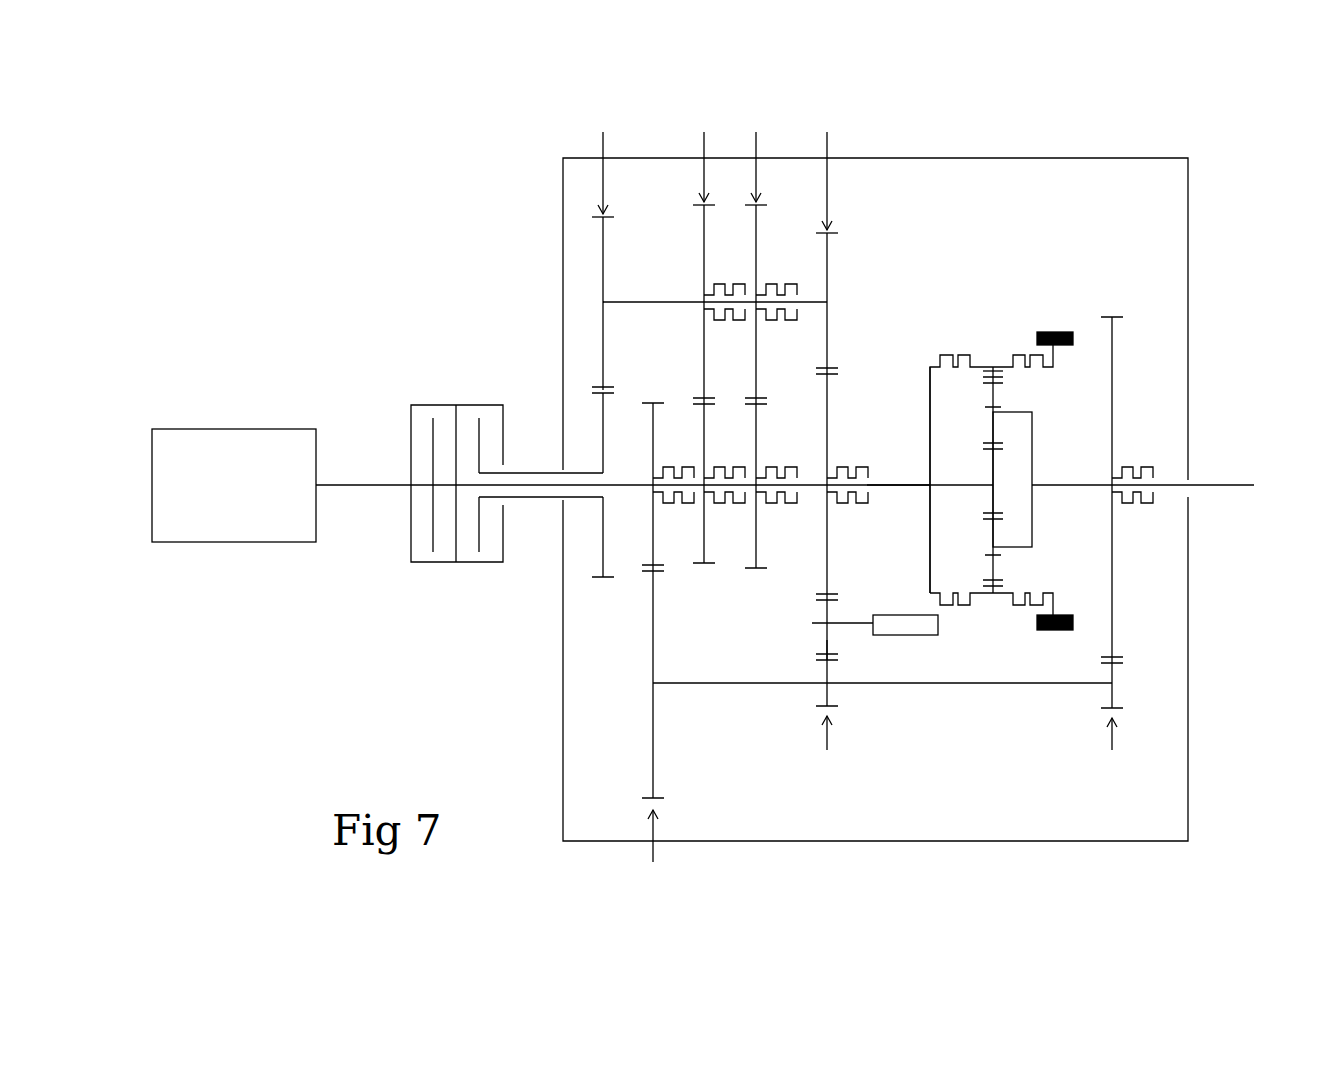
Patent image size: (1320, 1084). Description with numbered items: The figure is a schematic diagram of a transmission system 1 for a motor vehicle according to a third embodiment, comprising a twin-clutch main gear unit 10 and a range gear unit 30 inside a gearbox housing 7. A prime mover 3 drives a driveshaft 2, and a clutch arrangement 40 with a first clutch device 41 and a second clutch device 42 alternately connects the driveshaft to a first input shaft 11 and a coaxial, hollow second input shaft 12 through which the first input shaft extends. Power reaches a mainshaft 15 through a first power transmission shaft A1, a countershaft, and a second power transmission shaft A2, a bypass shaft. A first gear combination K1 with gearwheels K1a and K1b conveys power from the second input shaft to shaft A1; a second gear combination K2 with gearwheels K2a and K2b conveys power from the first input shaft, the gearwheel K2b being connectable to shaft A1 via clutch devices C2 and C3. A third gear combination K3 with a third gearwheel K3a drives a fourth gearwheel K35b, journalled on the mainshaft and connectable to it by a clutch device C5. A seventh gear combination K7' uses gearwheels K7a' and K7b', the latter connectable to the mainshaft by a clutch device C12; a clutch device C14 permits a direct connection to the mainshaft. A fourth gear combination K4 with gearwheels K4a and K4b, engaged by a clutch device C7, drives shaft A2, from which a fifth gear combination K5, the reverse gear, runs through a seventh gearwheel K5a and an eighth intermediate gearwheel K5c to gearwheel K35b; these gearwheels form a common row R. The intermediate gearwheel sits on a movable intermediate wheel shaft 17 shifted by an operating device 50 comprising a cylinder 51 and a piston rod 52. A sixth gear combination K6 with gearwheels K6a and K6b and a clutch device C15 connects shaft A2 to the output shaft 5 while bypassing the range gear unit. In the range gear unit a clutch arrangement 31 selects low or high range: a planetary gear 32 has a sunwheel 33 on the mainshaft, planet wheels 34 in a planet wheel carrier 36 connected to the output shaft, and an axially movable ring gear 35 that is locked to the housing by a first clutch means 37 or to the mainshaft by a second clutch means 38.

The transmission system 1 is at (432, 214).
The driveshaft 2 is at (355, 478).
The prime mover 3 is at (228, 432).
The output shaft 5 is at (1212, 480).
The gearbox housing 7 is at (1012, 157).
The twin-clutch main gear unit 10 is at (893, 282).
The first input shaft 11 is at (623, 480).
The second input shaft 12 is at (536, 470).
The mainshaft 15 is at (900, 490).
The intermediate wheel shaft 17 is at (822, 625).
The range gear unit 30 is at (1010, 428).
The clutch arrangement 31 is at (990, 356).
The planetary gear 32 is at (1053, 534).
The sunwheel 33 is at (990, 465).
The planet wheels 34 is at (995, 397).
The ring gear 35 is at (990, 372).
The planet wheel carrier 36 is at (1033, 453).
The first clutch means 37 is at (1037, 353).
The second clutch means 38 is at (945, 357).
The clutch arrangement 40 is at (437, 477).
The first clutch device 41 is at (432, 563).
The second clutch device 42 is at (468, 563).
The operating device 50 is at (905, 626).
The pneumatic or hydraulic cylinder 51 is at (907, 631).
The piston rod 52 is at (860, 617).
The first gear combination K1 is at (604, 164).
The second gearwheel K1a is at (603, 413).
The first gearwheel K1b is at (602, 257).
The second gear combination K2 is at (701, 153).
The gearwheel K2a is at (703, 540).
The gearwheel K2b is at (703, 257).
The third gear combination K3 is at (834, 221).
The third gearwheel K3a is at (829, 257).
The fourth gearwheel K35b is at (830, 397).
The fourth gear combination K4 is at (656, 858).
The sixth gearwheel K4a is at (650, 542).
The fifth gearwheel K4b is at (652, 723).
The fifth gear combination K5 is at (824, 754).
The seventh gearwheel K5a is at (830, 697).
The eighth intermediate gearwheel K5c is at (830, 642).
The sixth gear combination K6 is at (1114, 757).
The ninth gearwheel K6a is at (1112, 715).
The tenth gearwheel K6b is at (1113, 608).
The seventh gear combination K7' is at (762, 153).
The gearwheel K7a' is at (787, 240).
The gearwheel K7b' is at (762, 460).
The gearwheel row R is at (827, 167).
The first power transmission shaft A1 is at (647, 307).
The second power transmission shaft A2 is at (731, 688).
The clutch device C2 is at (730, 283).
The clutch device C3 is at (779, 283).
The clutch device C5 is at (857, 461).
The clutch device C7 is at (677, 464).
The clutch device C12 is at (783, 465).
The clutch device C14 is at (731, 465).
The clutch device C15 is at (1134, 464).